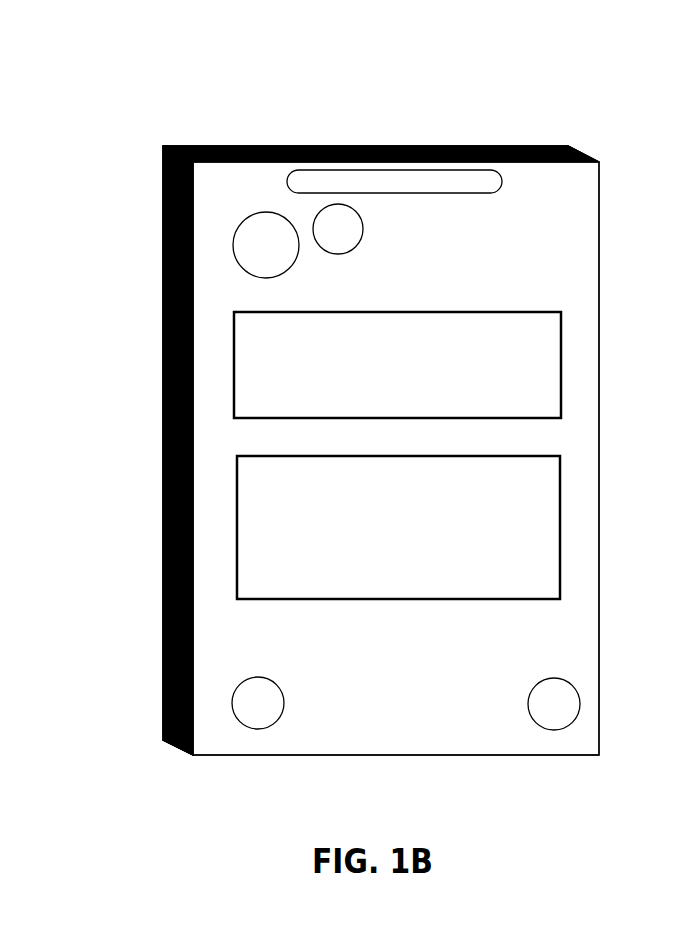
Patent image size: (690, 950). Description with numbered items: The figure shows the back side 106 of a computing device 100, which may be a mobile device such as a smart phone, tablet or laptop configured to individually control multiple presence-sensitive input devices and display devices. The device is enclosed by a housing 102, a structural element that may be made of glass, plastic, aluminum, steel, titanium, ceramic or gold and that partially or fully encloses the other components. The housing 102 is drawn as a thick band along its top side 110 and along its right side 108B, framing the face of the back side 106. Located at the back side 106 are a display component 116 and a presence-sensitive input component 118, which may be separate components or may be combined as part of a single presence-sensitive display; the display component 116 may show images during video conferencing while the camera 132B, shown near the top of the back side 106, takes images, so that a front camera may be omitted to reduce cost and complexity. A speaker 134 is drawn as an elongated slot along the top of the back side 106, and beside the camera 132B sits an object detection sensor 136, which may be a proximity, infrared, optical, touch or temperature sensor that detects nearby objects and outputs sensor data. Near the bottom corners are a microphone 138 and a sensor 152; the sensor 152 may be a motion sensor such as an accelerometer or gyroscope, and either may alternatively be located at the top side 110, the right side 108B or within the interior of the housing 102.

The computing device 100 is at (580, 85).
The housing 102 is at (163, 147).
The back side 106 is at (208, 283).
The right side 108B is at (163, 310).
The top side 110 is at (257, 147).
The display component 116 is at (397, 365).
The presence-sensitive input component 118 is at (398, 527).
The camera 132B is at (266, 245).
The speaker 134 is at (374, 178).
The object detection sensor 136 is at (338, 229).
The microphone 138 is at (258, 703).
The sensor 152 is at (554, 704).